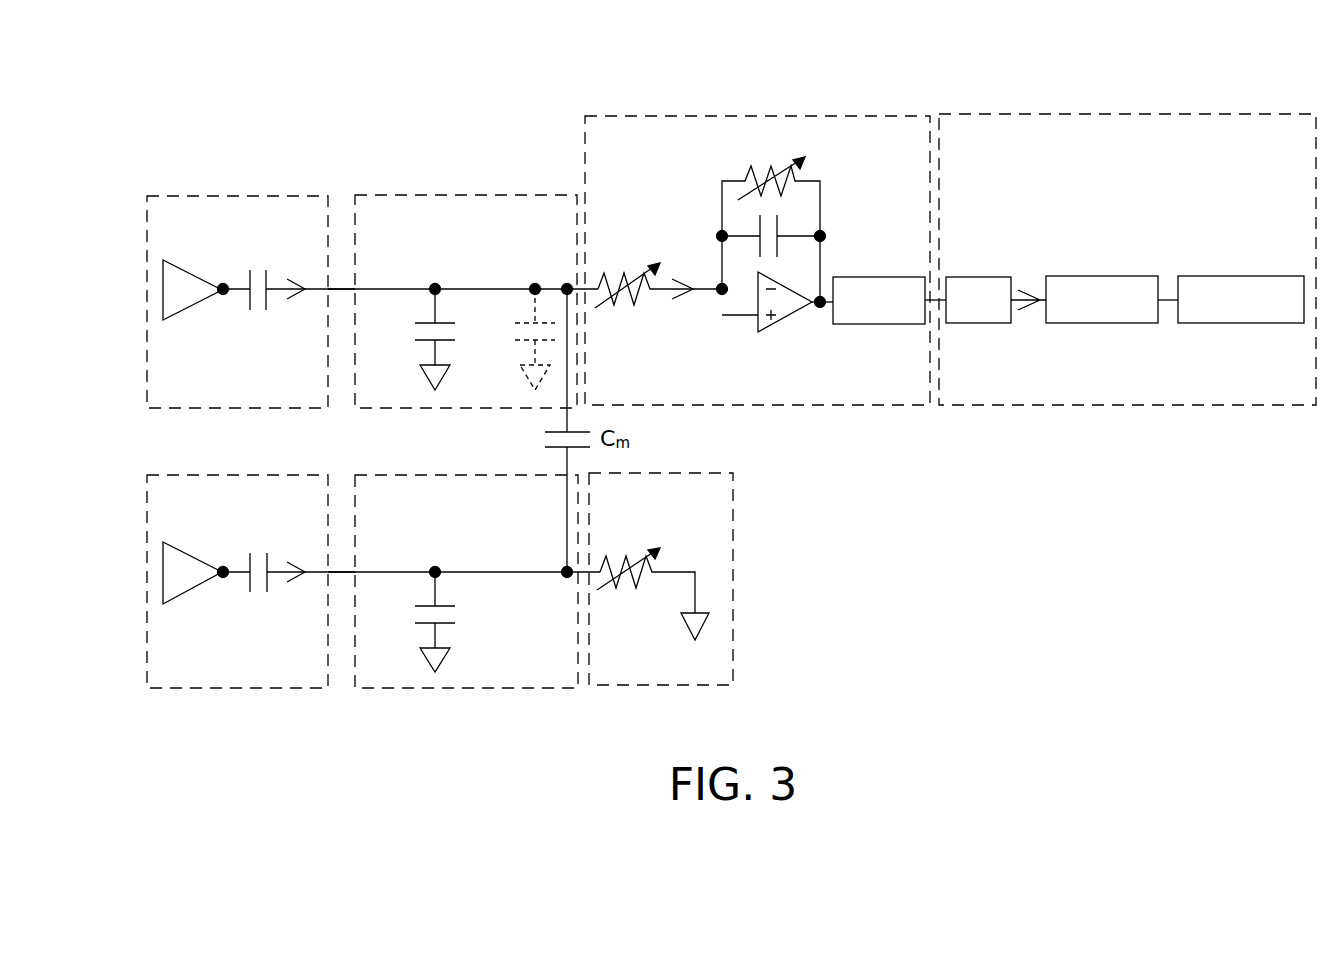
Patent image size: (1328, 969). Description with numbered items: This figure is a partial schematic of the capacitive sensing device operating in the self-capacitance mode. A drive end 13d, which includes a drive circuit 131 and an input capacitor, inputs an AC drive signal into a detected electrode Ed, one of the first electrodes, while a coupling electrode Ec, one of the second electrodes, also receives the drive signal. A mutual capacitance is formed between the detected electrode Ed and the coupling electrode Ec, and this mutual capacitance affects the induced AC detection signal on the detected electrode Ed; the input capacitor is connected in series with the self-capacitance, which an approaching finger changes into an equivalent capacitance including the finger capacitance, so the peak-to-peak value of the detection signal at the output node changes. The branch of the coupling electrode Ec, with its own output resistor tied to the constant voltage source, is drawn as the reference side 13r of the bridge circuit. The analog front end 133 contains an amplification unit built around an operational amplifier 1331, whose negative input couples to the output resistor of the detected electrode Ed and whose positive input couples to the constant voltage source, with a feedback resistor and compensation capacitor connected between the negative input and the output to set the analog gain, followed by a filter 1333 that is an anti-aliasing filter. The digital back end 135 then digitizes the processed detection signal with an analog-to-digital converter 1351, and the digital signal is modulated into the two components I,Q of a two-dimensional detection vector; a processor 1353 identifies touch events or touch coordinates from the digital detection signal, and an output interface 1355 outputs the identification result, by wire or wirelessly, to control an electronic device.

The drive circuit 131 is at (163, 289).
The drive end 13d is at (272, 196).
The detected electrode Ed is at (436, 195).
The coupling electrode Ec is at (455, 688).
The reference circuit 13r is at (735, 610).
The analog front end 133 is at (735, 116).
The operational amplifier 1331 is at (778, 331).
The filter 1333 is at (880, 324).
The digital back end 135 is at (1057, 113).
The analog-to-digital converter 1351 is at (958, 323).
The components I and Q I,Q is at (1025, 325).
The processor 1353 is at (1083, 323).
The output interface 1355 is at (1236, 323).